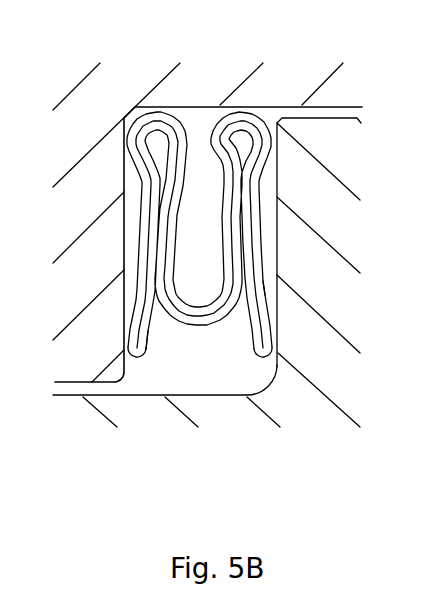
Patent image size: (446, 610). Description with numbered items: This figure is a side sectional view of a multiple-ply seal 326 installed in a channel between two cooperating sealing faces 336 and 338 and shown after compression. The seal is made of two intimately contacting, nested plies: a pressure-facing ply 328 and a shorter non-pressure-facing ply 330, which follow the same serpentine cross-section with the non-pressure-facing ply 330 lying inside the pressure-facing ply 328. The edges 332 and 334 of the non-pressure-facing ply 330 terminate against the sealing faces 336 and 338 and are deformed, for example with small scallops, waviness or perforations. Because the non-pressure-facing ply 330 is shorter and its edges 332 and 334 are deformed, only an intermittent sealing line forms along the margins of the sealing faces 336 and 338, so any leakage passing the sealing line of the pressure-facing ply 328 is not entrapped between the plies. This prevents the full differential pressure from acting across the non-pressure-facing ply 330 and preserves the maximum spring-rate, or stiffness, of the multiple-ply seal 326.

The multiple-ply seal 326 is at (263, 115).
The pressure-facing ply 328 is at (150, 340).
The non-pressure-facing ply 330 is at (266, 300).
The edge of non-pressure-facing ply 332 is at (277, 350).
The edge of non-pressure-facing ply 334 is at (125, 351).
The sealing face 336 is at (277, 247).
The sealing face 338 is at (124, 247).